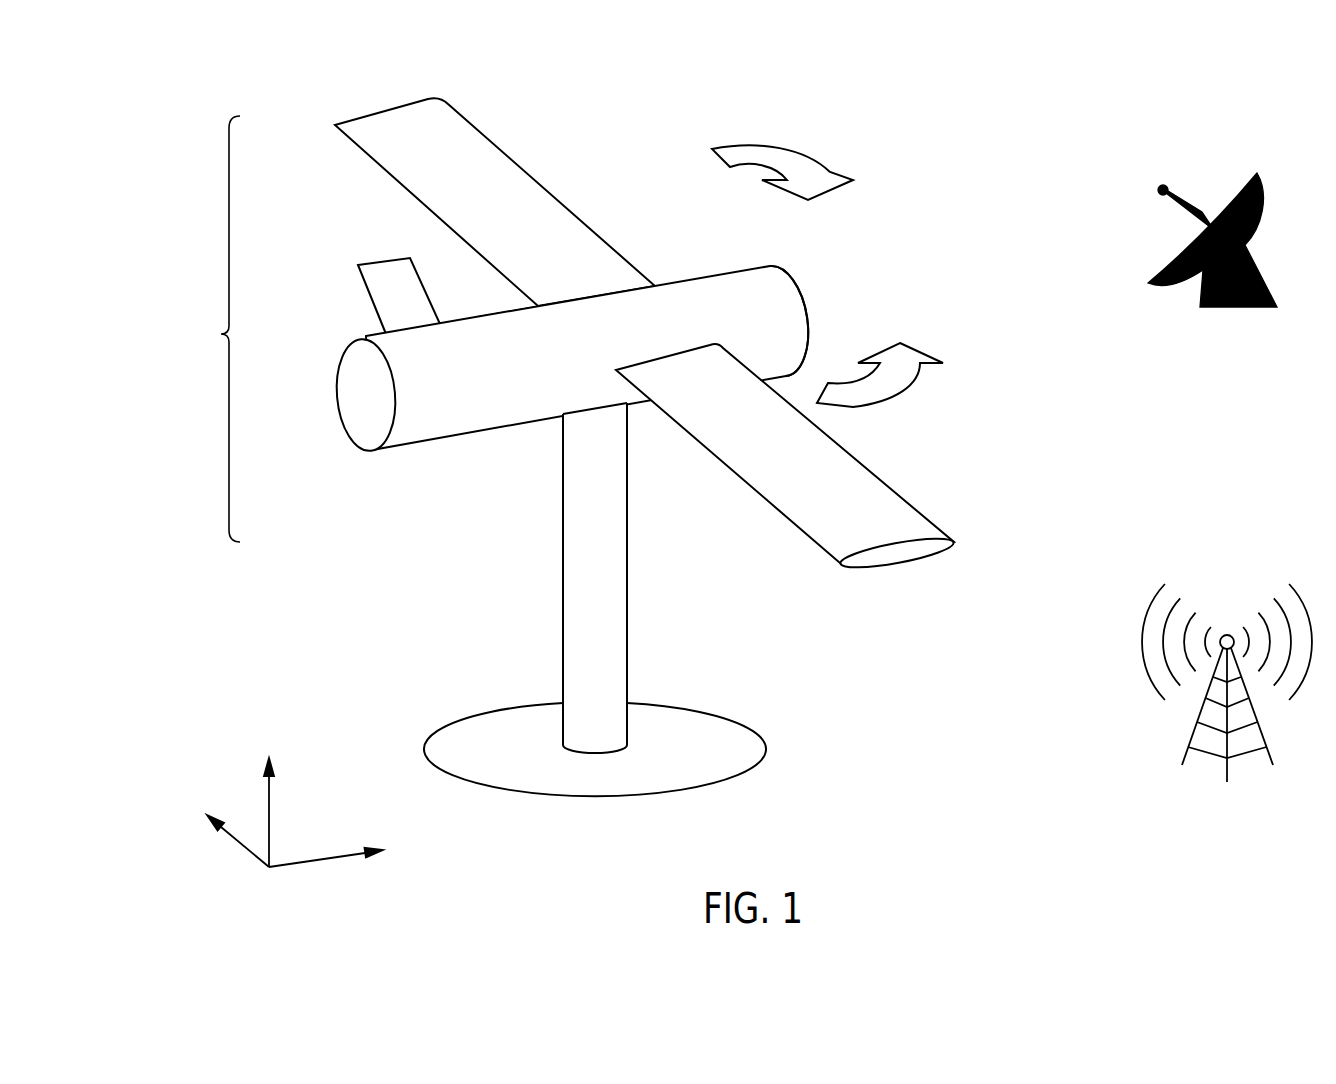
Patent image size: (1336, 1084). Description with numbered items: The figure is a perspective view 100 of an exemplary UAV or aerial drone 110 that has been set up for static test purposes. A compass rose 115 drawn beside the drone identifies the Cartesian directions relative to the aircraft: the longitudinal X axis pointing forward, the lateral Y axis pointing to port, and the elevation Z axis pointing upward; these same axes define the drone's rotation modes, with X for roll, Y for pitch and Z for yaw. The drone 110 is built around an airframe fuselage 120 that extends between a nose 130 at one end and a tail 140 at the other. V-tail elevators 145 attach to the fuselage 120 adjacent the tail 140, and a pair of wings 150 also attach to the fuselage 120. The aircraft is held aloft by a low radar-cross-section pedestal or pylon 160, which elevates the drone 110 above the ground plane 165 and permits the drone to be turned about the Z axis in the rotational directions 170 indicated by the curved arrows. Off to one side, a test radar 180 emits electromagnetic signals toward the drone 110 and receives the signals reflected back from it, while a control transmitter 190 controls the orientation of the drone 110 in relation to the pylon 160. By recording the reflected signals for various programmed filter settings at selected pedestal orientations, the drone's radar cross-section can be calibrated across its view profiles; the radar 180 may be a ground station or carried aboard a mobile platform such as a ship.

The perspective view 100 is at (143, 145).
The aerial drone 110 is at (586, 447).
The compass rose 115 is at (315, 843).
The airframe fuselage 120 is at (693, 280).
The nose 130 is at (803, 310).
The tail 140 is at (357, 448).
The V-tail elevators 145 is at (373, 262).
The wings 150 is at (917, 510).
The pedestal or pylon 160 is at (564, 548).
The ground plane 165 is at (712, 710).
The rotational directions 170 is at (785, 152).
The test radar 180 is at (1119, 213).
The control transmitter 190 is at (1162, 568).